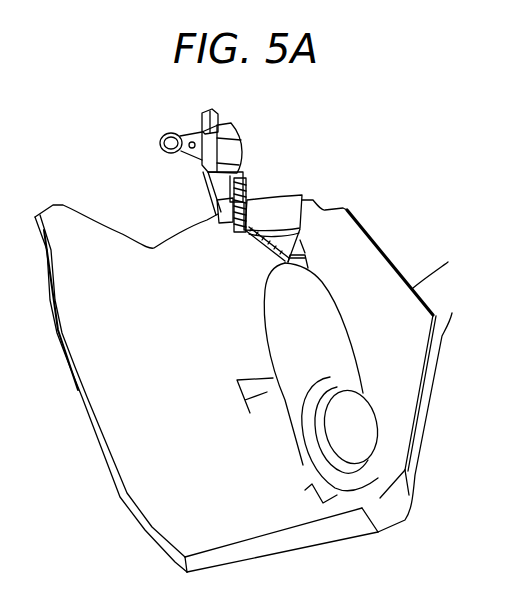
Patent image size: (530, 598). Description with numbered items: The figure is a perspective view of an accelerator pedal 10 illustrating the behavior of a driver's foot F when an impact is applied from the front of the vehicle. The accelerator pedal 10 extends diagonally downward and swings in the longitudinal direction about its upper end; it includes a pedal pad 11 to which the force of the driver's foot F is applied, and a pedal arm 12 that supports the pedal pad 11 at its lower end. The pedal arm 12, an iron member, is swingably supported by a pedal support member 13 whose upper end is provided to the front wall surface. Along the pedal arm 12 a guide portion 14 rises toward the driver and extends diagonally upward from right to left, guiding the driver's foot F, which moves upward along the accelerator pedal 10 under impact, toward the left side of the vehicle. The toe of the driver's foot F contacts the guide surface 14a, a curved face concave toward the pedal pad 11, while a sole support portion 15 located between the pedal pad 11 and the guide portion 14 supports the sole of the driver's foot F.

The accelerator pedal 10 is at (336, 267).
The pedal pad 11 is at (308, 268).
The pedal arm 12 is at (247, 243).
The pedal support member 13 is at (197, 172).
The guide portion 14 is at (320, 182).
The guide surface 14a is at (272, 200).
The sole support portion 15 is at (298, 238).
The driver's foot F is at (334, 338).